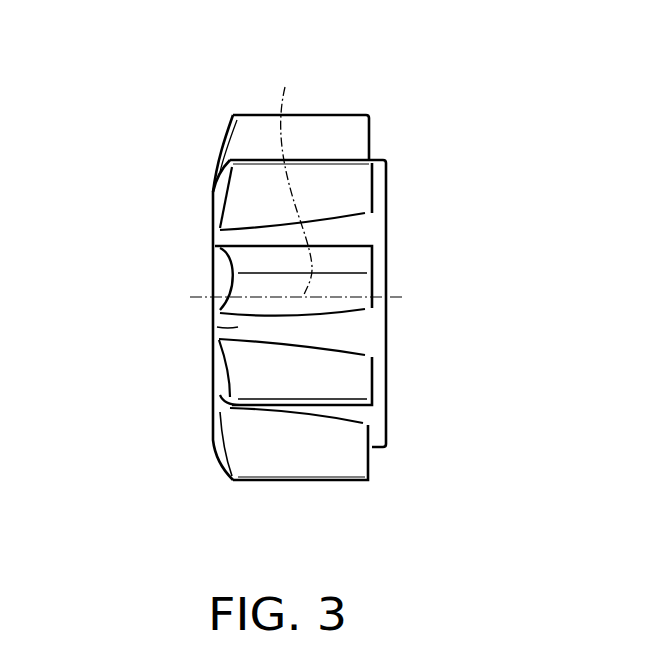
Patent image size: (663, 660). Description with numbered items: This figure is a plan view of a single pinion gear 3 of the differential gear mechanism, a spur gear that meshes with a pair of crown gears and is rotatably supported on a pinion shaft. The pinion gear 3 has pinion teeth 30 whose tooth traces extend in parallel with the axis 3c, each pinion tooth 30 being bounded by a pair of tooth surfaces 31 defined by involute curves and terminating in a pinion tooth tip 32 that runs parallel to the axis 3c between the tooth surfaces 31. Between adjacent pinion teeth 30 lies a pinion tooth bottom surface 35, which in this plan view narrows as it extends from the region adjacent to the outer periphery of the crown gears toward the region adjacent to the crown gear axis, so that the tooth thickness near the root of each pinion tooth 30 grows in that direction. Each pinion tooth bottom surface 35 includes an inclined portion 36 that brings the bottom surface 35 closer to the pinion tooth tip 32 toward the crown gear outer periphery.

The pinion gear 3 is at (196, 142).
The axis 3c is at (293, 180).
The pinion tooth 30 is at (222, 370).
The tooth surface 31 is at (352, 132).
The pinion tooth tip 32 is at (305, 482).
The pinion tooth bottom surface 35 is at (337, 233).
The inclined portion 36 is at (222, 327).